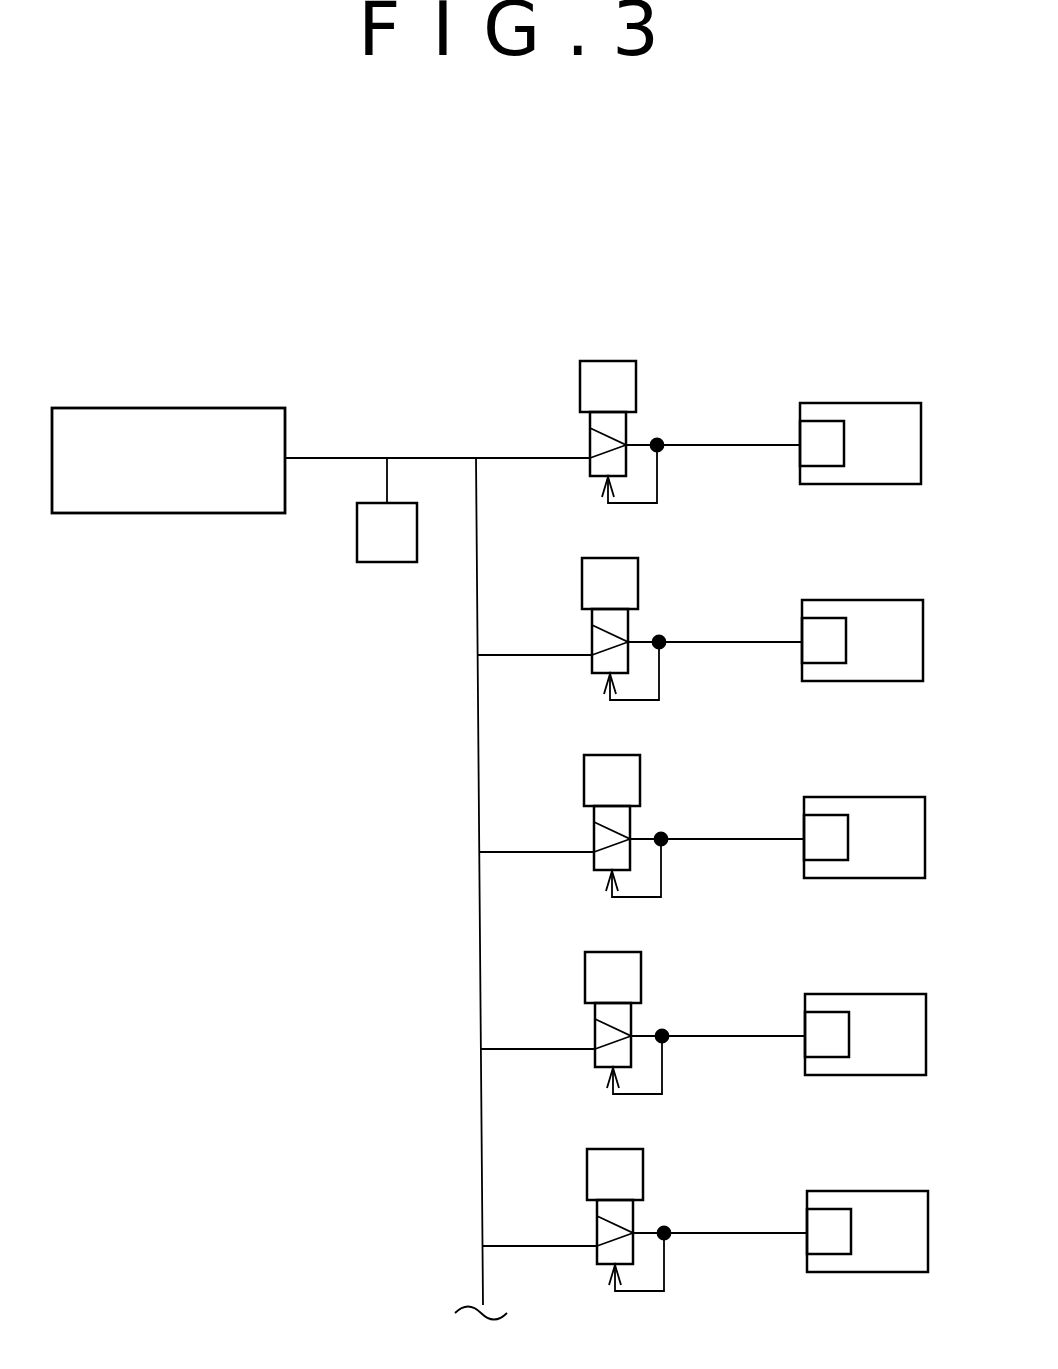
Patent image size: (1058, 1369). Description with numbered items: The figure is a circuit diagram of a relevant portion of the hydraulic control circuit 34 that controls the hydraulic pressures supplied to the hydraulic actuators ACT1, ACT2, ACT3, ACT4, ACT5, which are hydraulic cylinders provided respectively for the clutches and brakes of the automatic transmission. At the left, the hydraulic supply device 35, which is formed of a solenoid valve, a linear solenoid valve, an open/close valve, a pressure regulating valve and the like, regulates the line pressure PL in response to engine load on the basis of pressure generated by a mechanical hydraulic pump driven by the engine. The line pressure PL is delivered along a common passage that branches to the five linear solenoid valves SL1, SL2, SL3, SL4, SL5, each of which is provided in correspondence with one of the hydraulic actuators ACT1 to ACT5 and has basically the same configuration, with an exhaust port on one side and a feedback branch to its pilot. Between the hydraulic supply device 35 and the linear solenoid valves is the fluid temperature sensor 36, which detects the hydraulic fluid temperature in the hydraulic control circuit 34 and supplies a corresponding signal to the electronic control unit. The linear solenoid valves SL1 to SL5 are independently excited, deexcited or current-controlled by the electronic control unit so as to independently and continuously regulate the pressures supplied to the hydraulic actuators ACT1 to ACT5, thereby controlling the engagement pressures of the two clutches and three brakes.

The hydraulic control circuit 34 is at (835, 304).
The hydraulic supply device 35 is at (167, 408).
The fluid temperature sensor 36 is at (392, 547).
The line pressure PL is at (396, 871).
The linear solenoid valve SL1 is at (622, 368).
The linear solenoid valve SL2 is at (624, 565).
The linear solenoid valve SL3 is at (626, 762).
The linear solenoid valve SL4 is at (627, 959).
The linear solenoid valve SL5 is at (629, 1156).
The hydraulic actuator ACT1 is at (808, 435).
The hydraulic actuator ACT2 is at (813, 632).
The hydraulic actuator ACT3 is at (815, 829).
The hydraulic actuator ACT4 is at (816, 1026).
The hydraulic actuator ACT5 is at (818, 1223).